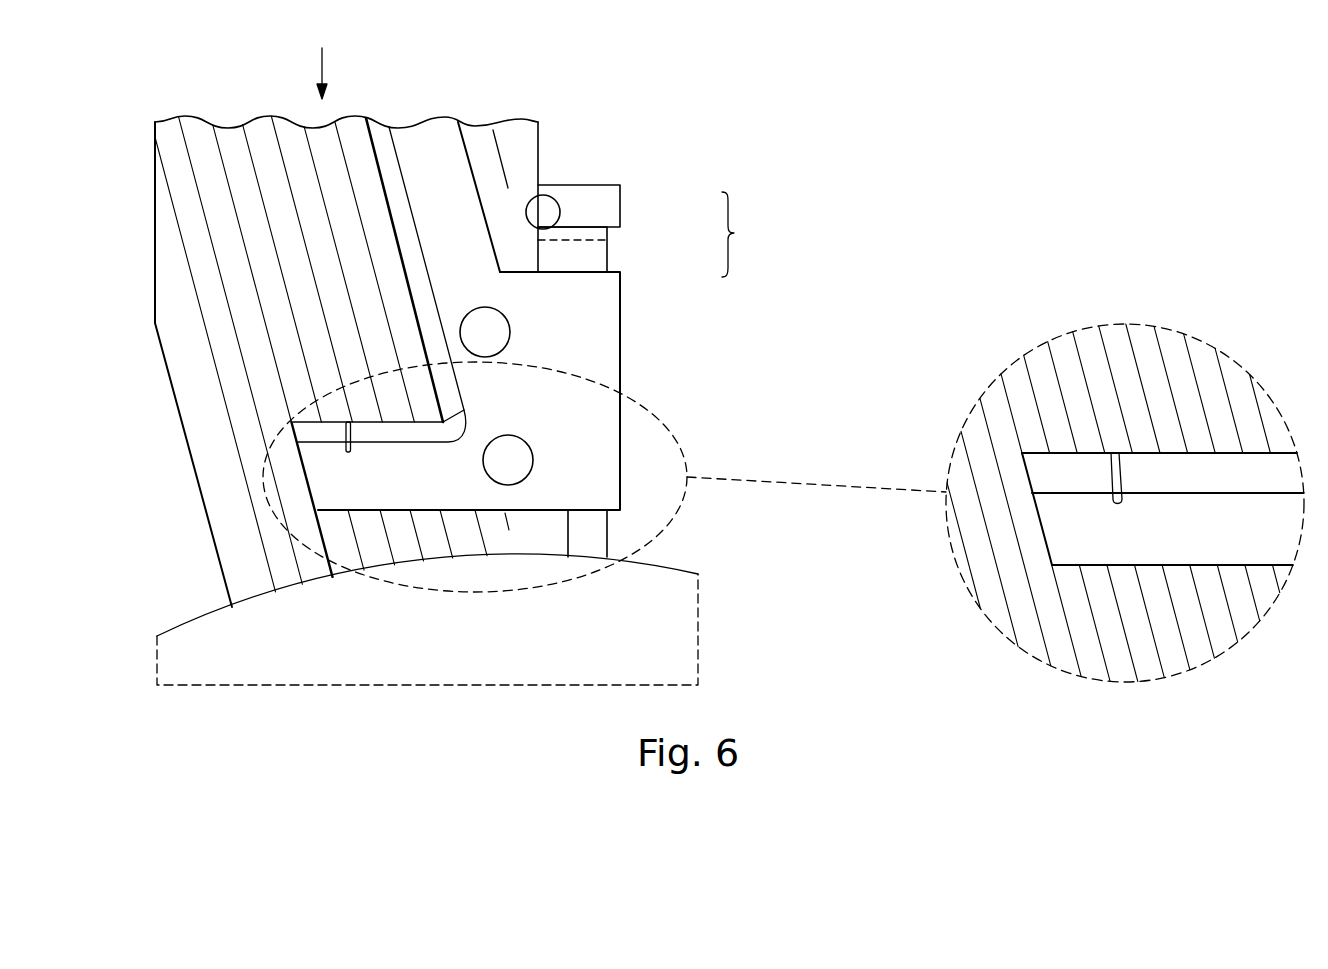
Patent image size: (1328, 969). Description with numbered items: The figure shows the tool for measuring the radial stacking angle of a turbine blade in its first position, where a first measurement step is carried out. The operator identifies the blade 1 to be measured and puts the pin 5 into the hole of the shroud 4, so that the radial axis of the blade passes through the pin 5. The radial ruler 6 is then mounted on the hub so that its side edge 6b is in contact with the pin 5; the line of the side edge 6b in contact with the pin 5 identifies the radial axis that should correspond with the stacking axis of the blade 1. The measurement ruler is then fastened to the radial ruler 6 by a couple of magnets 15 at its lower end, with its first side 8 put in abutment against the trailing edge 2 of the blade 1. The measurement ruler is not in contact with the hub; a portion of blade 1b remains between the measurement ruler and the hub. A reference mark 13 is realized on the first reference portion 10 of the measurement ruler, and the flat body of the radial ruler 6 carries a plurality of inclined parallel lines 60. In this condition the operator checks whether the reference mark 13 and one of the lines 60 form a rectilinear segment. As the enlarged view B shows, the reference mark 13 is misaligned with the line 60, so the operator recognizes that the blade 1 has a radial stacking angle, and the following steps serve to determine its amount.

The blade 1 is at (737, 234).
The portion of blade 1b is at (609, 535).
The trailing edge 2 is at (611, 255).
The shroud 4 is at (600, 200).
The pin 5 is at (547, 205).
The radial ruler 6 is at (152, 217).
The side edge 6b is at (540, 145).
The first side 8 is at (622, 370).
The first reference portion 10 is at (333, 487).
The reference mark 13 is at (340, 432).
The magnets 15 is at (493, 332).
The parallel lines 60 is at (1118, 357).
The enlarged view B is at (1190, 234).